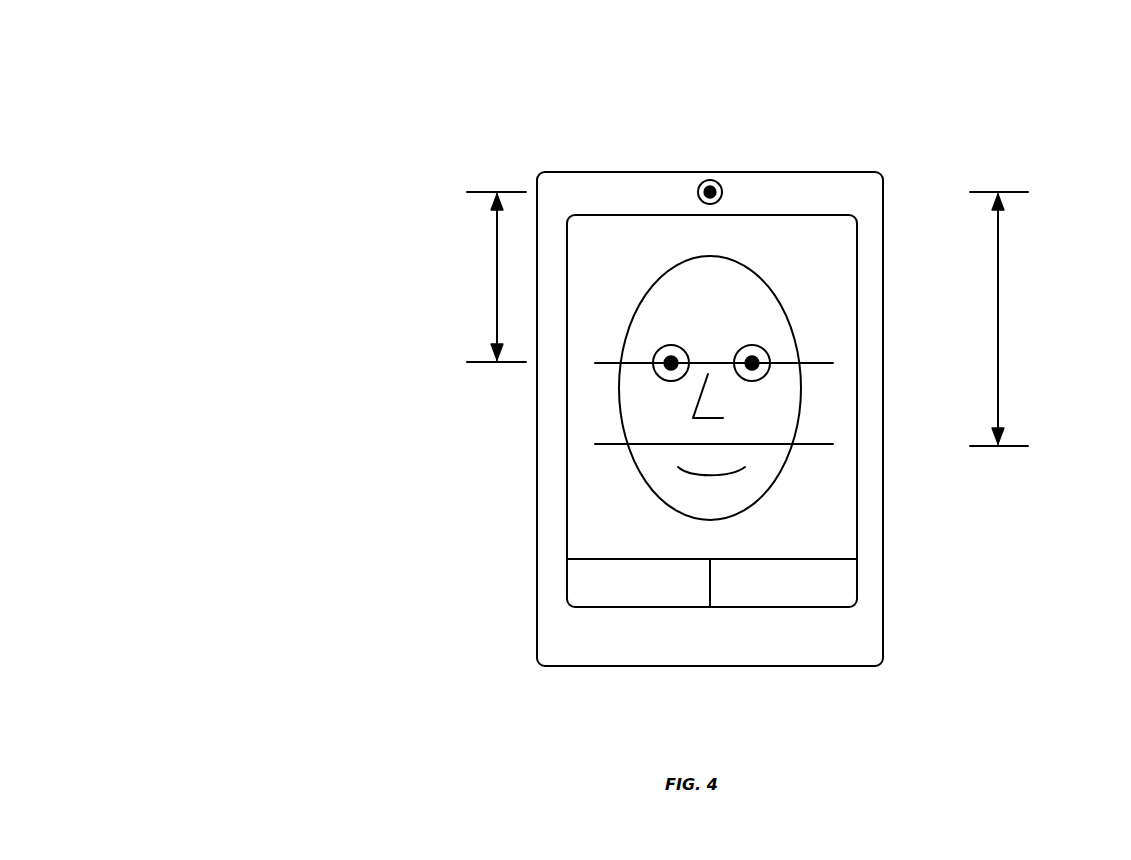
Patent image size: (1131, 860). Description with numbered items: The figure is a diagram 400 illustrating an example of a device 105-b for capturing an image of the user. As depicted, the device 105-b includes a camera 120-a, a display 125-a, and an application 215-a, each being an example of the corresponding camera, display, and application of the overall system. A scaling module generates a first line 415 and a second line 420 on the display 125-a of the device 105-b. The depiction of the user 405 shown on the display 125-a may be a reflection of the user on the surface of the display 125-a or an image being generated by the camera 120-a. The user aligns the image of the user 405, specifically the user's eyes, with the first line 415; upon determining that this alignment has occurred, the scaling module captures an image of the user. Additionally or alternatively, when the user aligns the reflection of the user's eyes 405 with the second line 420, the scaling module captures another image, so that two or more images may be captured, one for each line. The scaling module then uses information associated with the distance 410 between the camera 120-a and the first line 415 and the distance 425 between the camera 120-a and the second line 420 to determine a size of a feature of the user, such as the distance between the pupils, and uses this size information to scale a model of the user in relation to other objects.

The diagram 400 is at (258, 79).
The device 105-b is at (883, 207).
The camera 120-a is at (709, 180).
The display 125-a is at (835, 285).
The application 215-a is at (843, 582).
The depiction of user 405 is at (755, 273).
The distance 410 is at (482, 293).
The first line 415 is at (833, 363).
The second line 420 is at (833, 444).
The distance 425 is at (1015, 293).